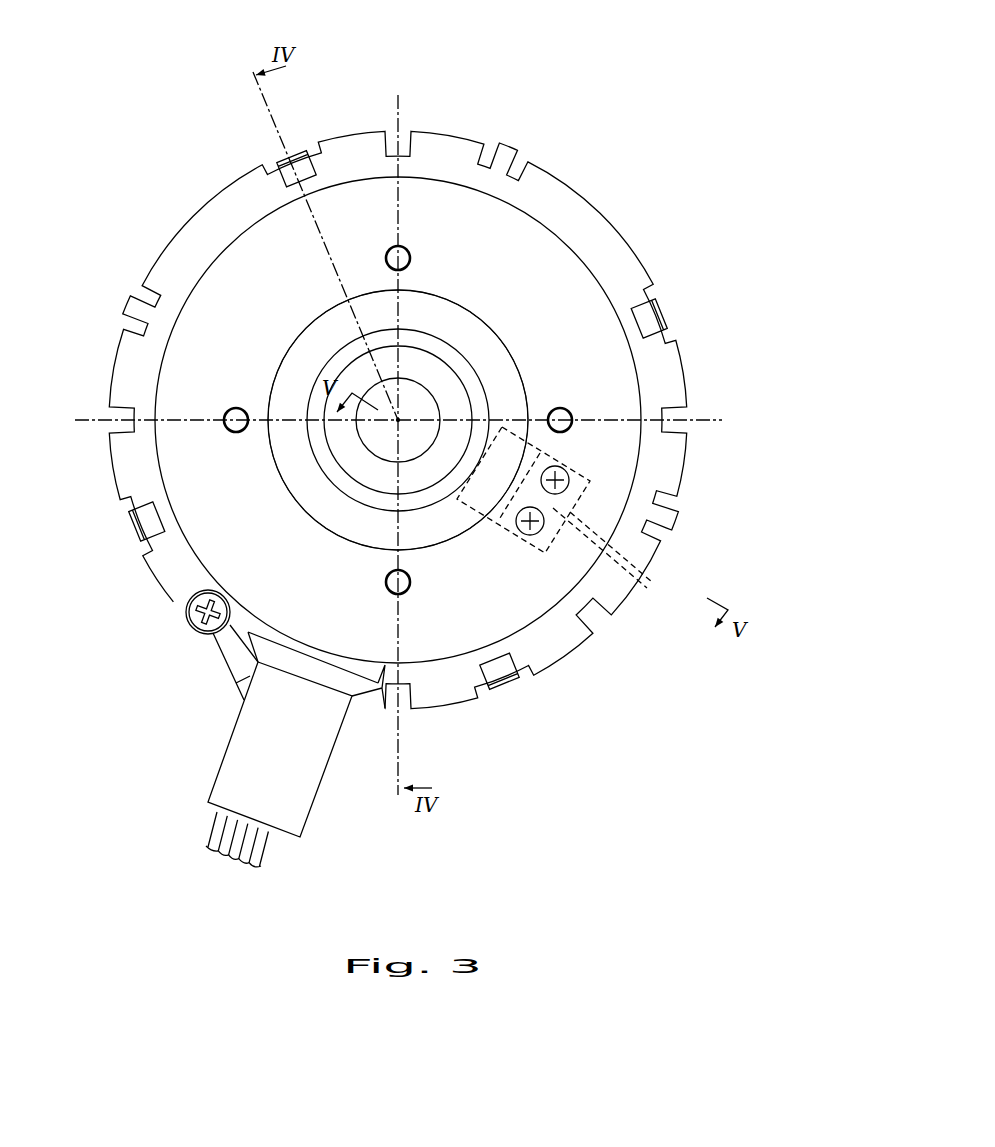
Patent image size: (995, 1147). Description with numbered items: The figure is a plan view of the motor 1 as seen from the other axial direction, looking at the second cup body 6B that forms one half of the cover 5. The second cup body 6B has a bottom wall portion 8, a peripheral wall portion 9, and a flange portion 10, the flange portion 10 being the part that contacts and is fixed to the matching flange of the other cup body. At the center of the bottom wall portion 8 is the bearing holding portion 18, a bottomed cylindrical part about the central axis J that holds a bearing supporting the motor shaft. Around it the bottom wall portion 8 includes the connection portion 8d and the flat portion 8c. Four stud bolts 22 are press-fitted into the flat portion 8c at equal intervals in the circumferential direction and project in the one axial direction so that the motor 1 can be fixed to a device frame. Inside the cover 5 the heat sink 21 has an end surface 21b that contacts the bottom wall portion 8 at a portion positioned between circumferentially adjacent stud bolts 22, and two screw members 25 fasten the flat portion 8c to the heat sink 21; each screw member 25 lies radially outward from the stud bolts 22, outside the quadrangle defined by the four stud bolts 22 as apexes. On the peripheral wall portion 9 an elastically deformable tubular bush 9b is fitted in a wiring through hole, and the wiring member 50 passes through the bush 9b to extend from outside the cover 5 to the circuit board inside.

The motor 1 is at (653, 87).
The cover 5 is at (200, 194).
The second cup body 6B is at (430, 172).
The bottom wall portion 8 is at (588, 368).
The flat portion 8c is at (195, 347).
The connection portion 8d is at (308, 350).
The peripheral wall portion 9 is at (593, 261).
The bush 9b is at (243, 753).
The flange portion 10 is at (585, 214).
The bearing holding portion 18 is at (455, 439).
The heat sink 21 is at (529, 556).
The end surface 21b is at (630, 574).
The stud bolt 22 is at (576, 408).
The screw member 25 is at (568, 488).
The wiring member 50 is at (217, 827).
The central axis J is at (398, 420).